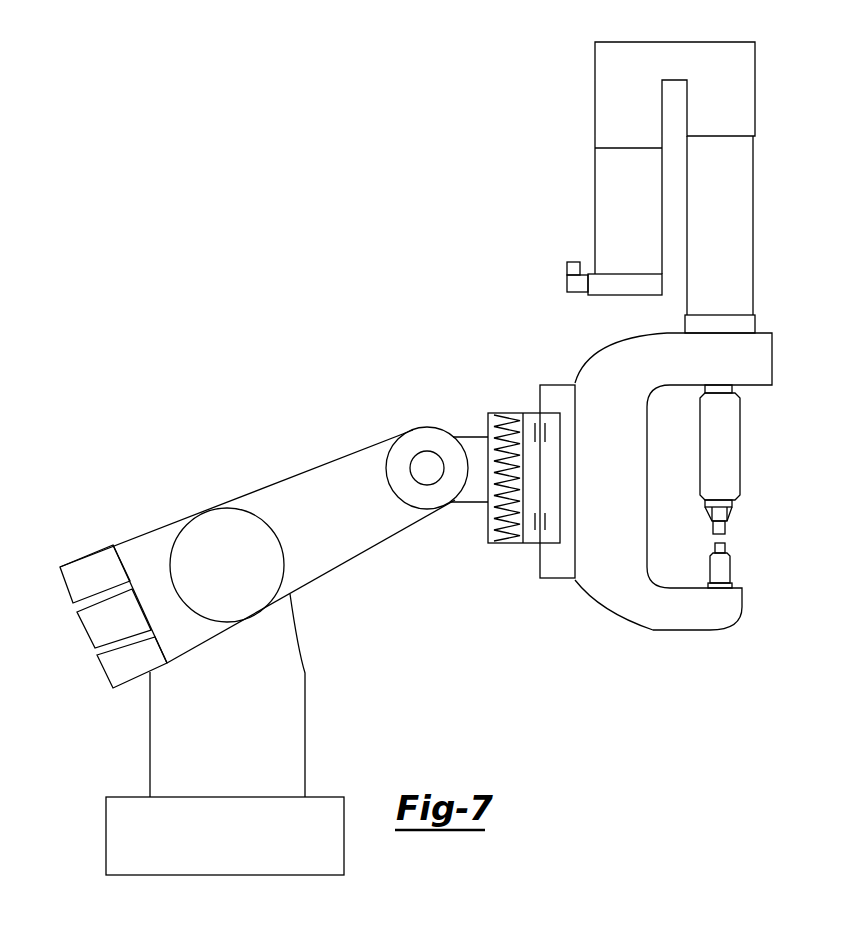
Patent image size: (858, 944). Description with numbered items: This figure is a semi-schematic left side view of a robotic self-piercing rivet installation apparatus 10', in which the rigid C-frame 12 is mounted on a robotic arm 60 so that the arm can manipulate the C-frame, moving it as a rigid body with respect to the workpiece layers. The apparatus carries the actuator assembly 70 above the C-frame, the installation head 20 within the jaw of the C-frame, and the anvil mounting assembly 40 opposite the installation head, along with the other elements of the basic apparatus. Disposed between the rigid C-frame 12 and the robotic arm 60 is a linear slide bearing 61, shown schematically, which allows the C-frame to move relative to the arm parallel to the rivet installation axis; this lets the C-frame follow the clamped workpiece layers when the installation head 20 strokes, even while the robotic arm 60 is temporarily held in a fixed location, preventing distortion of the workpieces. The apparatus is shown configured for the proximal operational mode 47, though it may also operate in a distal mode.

The robotic self-piercing rivet installation apparatus 10' is at (274, 593).
The rigid C-frame 12 is at (628, 598).
The installation head 20 is at (740, 433).
The anvil mounting assembly 40 is at (739, 568).
The proximal operational mode 47 is at (755, 481).
The robotic arm 60 is at (324, 463).
The linear slide bearing 61 is at (540, 543).
The actuator assembly 70 is at (594, 103).